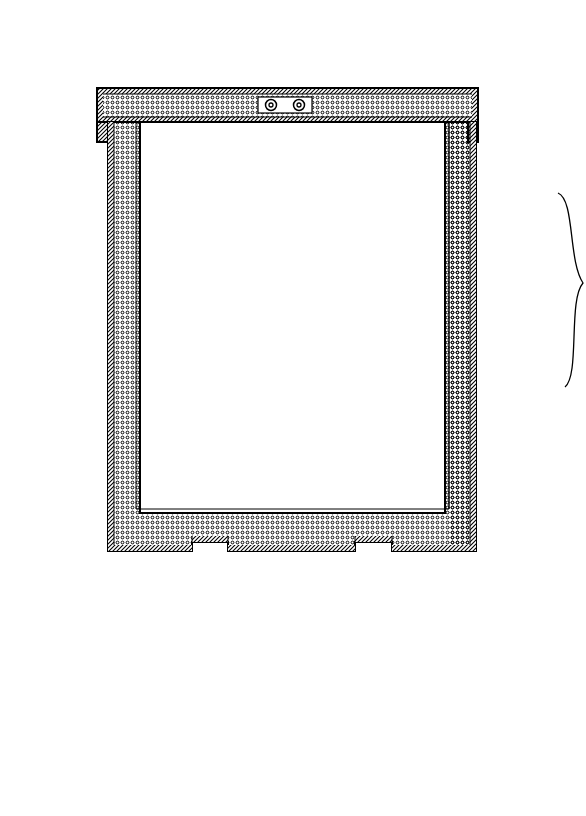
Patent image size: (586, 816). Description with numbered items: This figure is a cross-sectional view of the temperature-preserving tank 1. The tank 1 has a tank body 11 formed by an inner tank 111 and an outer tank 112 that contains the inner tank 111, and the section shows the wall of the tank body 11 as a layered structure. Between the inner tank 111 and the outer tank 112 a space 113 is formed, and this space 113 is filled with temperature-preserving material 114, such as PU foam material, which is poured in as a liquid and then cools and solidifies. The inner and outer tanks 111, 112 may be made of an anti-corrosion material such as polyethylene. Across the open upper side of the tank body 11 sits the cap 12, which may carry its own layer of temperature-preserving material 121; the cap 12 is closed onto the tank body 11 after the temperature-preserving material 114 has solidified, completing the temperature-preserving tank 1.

The temperature-preserving tank 1 is at (272, 585).
The tank body 11 is at (0, 468).
The inner tank 111 is at (473, 225).
The outer tank 112 is at (473, 266).
The space 113 is at (468, 308).
The temperature-preserving material 114 is at (478, 352).
The cap 12 is at (368, 87).
The layer of temperature-preserving material 121 is at (420, 86).